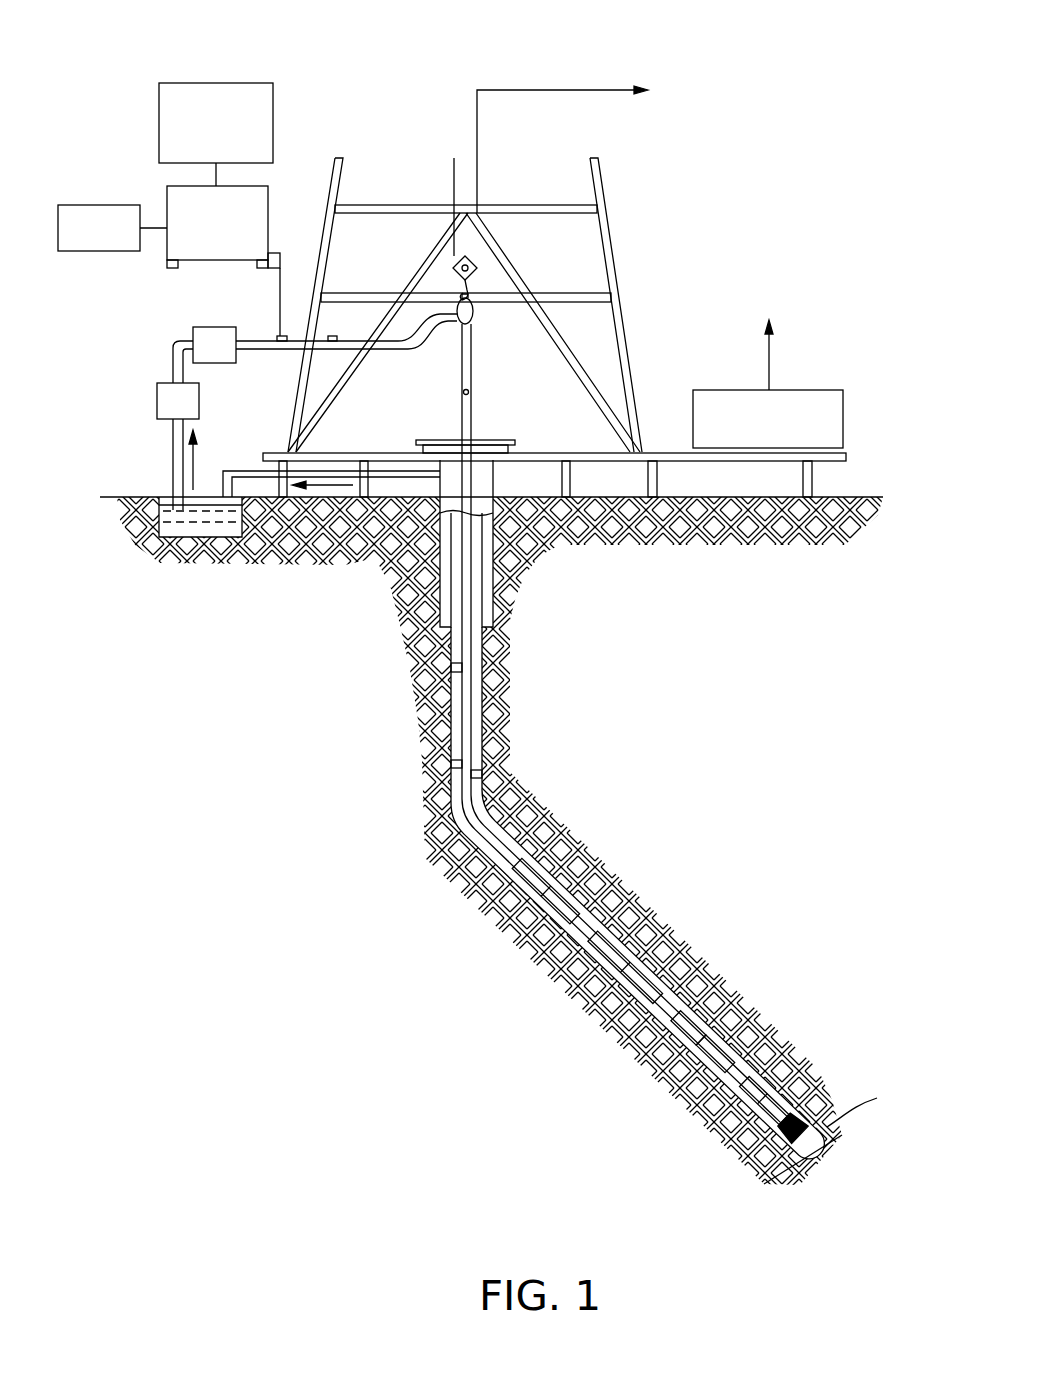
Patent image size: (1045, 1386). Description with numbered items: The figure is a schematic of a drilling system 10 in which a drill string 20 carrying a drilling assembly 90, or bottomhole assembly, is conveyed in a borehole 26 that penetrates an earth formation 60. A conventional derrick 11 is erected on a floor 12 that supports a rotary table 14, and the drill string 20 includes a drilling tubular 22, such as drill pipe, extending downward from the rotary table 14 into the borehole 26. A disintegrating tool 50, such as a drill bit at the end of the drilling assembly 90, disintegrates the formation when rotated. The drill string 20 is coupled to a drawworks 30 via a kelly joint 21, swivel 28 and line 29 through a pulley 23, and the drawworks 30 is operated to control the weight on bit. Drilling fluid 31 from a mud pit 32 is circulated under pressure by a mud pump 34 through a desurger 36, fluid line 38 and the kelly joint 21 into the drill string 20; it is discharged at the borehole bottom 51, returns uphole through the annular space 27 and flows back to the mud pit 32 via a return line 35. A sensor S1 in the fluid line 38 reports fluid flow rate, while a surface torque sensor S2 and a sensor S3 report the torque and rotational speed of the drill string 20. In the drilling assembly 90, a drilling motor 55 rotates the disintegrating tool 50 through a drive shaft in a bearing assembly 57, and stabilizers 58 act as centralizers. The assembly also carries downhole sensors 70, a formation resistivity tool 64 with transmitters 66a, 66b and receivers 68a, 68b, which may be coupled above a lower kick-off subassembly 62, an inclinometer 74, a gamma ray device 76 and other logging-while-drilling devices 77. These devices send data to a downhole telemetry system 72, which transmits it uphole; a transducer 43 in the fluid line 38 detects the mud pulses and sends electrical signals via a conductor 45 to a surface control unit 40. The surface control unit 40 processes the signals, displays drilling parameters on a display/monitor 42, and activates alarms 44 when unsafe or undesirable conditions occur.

The drilling system 10 is at (391, 110).
The derrick 11 is at (625, 308).
The floor 12 is at (646, 452).
The rotary table 14 is at (490, 437).
The drill string 20 is at (480, 640).
The kelly joint 21 is at (472, 378).
The drilling tubular 22 is at (448, 693).
The pulley 23 is at (475, 268).
The borehole 26 is at (483, 802).
The annular space 27 is at (500, 832).
The swivel 28 is at (450, 325).
The line 29 is at (477, 187).
The drawworks 30 is at (820, 390).
The drilling fluid 31 is at (160, 520).
The mud pit 32 is at (222, 535).
The mud pump 34 is at (157, 392).
The return line 35 is at (403, 478).
The desurger 36 is at (197, 327).
The fluid line 38 is at (287, 355).
The surface control unit 40 is at (167, 193).
The display/monitor 42 is at (193, 82).
The transducer 43 is at (277, 333).
The alarms 44 is at (118, 251).
The conductor 45 is at (275, 252).
The disintegrating tool 50 is at (825, 1125).
The borehole bottom 51 is at (778, 1180).
The drilling motor 55 is at (613, 922).
The bearing assembly 57 is at (737, 1112).
The stabilizers 58 is at (627, 960).
The earth formation 60 is at (285, 882).
The lower kick-off subassembly 62 is at (765, 1072).
The formation resistivity tool 64 is at (685, 1038).
The transmitter 66a is at (650, 988).
The transmitter 66b is at (700, 1072).
The receiver 68a is at (680, 1025).
The receiver 68b is at (690, 1028).
The downhole sensors 70 is at (517, 867).
The downhole telemetry system 72 is at (462, 768).
The inclinometer 74 is at (700, 1038).
The gamma ray device 76 is at (745, 1062).
The logging-while-drilling devices 77 is at (543, 922).
The drilling assembly 90 is at (589, 883).
The sensor S1 is at (333, 336).
The surface torque sensor S2 is at (463, 392).
The sensor S3 is at (515, 439).